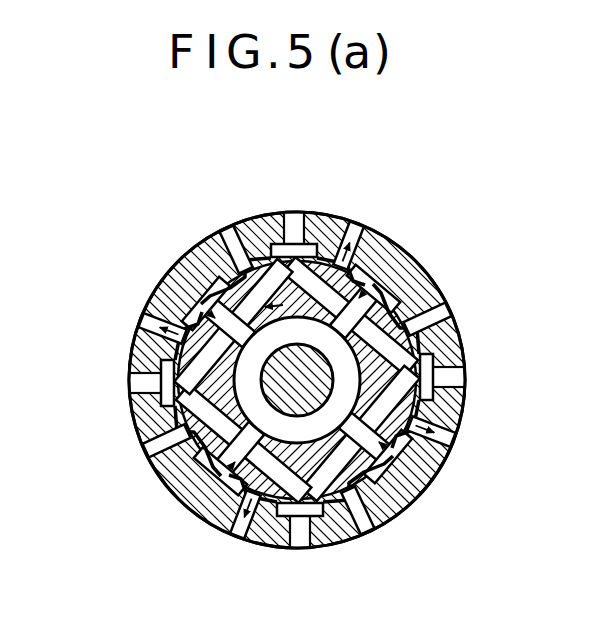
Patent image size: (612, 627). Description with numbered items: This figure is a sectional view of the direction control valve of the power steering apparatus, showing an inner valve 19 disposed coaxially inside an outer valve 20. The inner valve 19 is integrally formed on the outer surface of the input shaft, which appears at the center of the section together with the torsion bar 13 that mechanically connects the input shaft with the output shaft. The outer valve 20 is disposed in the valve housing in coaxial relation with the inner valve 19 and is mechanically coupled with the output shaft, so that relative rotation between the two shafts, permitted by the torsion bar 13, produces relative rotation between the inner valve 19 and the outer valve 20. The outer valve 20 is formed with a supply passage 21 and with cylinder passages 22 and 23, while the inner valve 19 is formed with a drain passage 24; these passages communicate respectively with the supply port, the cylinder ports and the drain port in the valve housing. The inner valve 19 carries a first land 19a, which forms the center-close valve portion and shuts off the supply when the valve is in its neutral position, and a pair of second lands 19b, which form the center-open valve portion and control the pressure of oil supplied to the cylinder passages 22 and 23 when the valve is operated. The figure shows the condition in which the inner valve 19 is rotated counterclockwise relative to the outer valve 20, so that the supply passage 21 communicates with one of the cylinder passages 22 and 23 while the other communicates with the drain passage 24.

The torsion bar 13 is at (315, 473).
The inner valve 19 is at (274, 382).
The first land 19a is at (296, 322).
The second lands 19b is at (270, 348).
The outer valve 20 is at (290, 372).
The supply passage 21 is at (296, 378).
The cylinder passage 22 is at (302, 369).
The cylinder passage 23 is at (284, 376).
The drain passage 24 is at (369, 342).